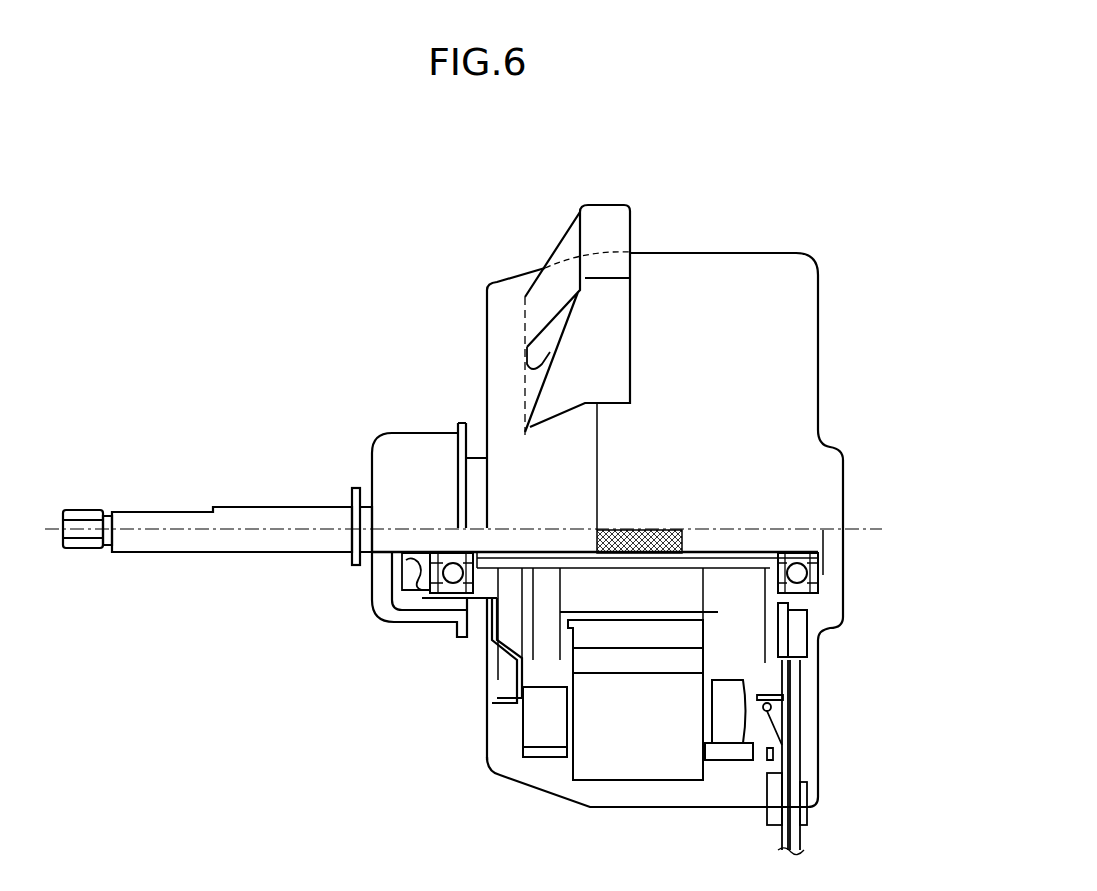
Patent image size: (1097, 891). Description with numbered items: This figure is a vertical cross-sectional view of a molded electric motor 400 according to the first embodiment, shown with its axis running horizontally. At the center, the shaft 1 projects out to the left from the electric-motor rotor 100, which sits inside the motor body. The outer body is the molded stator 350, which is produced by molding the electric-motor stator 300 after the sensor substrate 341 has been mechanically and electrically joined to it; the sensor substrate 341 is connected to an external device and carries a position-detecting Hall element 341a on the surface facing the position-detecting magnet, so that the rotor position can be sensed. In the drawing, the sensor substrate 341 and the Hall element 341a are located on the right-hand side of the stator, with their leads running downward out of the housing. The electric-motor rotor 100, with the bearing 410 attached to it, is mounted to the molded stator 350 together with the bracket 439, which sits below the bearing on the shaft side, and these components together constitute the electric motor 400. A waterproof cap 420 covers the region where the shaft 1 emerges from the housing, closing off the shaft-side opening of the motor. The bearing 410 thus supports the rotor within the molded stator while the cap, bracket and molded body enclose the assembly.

The shaft 1 is at (150, 538).
The electric-motor rotor 100 is at (641, 645).
The electric-motor stator 300 is at (600, 760).
The sensor substrate 341 is at (782, 630).
The position-detecting Hall element 341a is at (777, 665).
The molded stator 350 is at (711, 277).
The electric motor 400 is at (365, 192).
The bearing 410 is at (412, 590).
The waterproof cap 420 is at (414, 450).
The bracket 439 is at (518, 673).